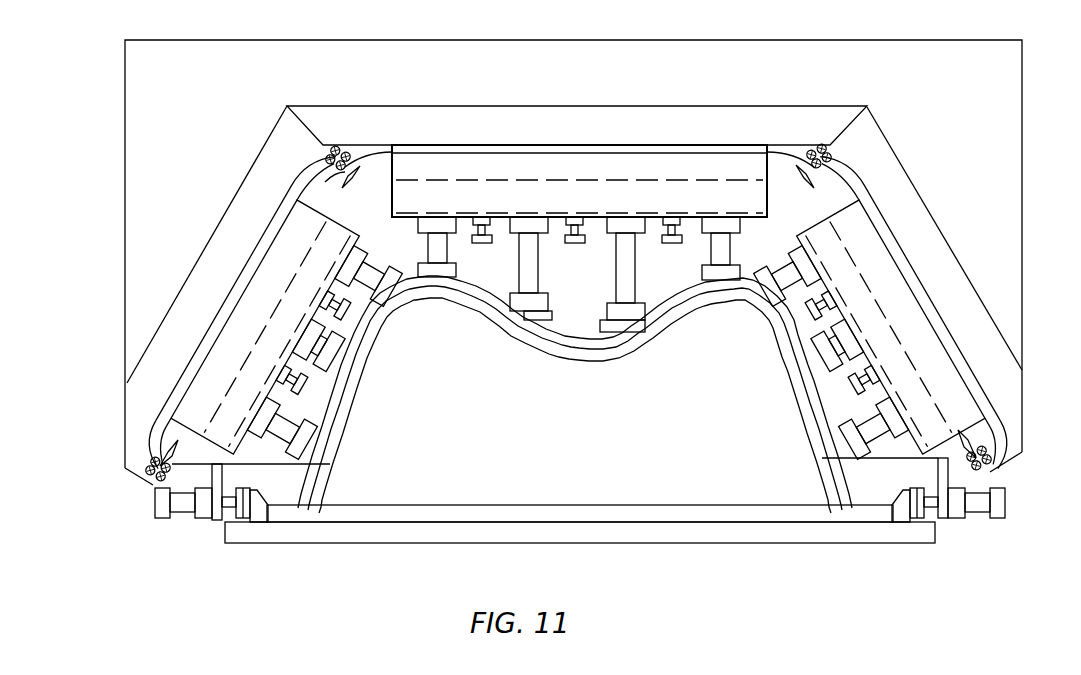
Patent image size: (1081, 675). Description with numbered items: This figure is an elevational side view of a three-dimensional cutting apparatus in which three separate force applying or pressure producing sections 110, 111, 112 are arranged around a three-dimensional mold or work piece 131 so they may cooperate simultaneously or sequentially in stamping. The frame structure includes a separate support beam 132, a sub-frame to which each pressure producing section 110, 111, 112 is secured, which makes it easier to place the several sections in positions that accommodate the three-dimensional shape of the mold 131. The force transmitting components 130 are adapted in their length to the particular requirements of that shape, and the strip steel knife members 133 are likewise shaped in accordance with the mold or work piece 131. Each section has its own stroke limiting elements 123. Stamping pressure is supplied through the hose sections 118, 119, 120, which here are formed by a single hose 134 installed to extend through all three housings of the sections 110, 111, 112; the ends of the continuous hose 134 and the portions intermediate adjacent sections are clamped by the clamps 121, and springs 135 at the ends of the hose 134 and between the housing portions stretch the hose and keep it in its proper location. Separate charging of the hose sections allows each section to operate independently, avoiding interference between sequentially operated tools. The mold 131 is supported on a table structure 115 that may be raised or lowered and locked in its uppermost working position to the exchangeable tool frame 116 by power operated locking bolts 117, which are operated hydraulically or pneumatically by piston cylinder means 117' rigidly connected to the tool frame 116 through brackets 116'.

The force applying section 110 is at (232, 332).
The force applying section 111 is at (657, 160).
The force applying section 112 is at (925, 345).
The table structure 115 is at (703, 533).
The exchangeable tool frame 116 is at (573, 246).
The bracket 116' is at (579, 509).
The locking bolt 117 is at (580, 530).
The piston cylinder means 117' is at (591, 520).
The hose section 118 is at (333, 190).
The hose section 119 is at (380, 160).
The hose section 120 is at (818, 190).
The clamp 121 is at (355, 168).
The stroke limiting element 123 is at (488, 238).
The force transmitting component 130 is at (530, 266).
The mold 131 is at (572, 512).
The support beam 132 is at (553, 145).
The strip steel knife member 133 is at (604, 352).
The hose 134 is at (312, 182).
The spring 135 is at (332, 148).